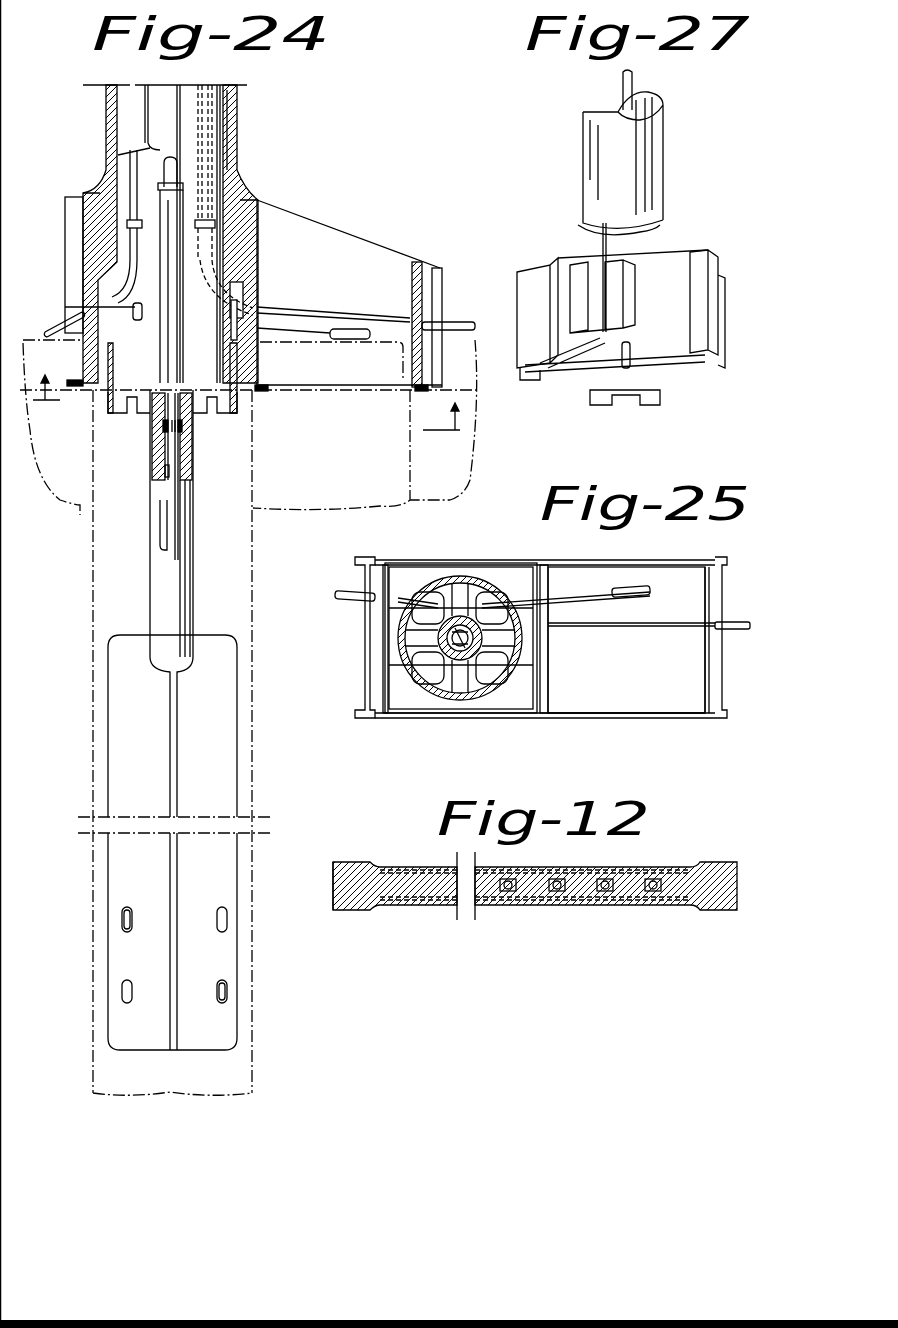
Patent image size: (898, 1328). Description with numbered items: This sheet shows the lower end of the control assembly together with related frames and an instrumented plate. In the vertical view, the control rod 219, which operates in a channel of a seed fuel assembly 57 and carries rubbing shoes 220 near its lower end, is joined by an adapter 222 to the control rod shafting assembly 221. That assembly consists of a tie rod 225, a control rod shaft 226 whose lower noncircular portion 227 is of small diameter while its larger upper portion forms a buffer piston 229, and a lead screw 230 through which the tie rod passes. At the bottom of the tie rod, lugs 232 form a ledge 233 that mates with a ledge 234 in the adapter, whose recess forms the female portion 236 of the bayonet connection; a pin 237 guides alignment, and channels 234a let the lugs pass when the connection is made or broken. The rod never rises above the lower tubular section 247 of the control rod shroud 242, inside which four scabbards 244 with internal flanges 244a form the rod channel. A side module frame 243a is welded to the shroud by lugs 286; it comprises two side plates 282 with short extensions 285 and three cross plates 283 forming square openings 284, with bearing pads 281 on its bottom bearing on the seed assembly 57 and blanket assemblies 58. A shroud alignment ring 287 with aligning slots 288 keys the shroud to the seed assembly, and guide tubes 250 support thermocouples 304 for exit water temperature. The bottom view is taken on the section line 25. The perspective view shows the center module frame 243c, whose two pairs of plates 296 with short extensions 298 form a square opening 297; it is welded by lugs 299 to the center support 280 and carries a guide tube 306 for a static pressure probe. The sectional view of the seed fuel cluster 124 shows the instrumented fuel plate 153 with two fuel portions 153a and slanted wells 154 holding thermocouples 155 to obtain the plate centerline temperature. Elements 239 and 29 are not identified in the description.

In FIG. 24, the control rod shafting assembly 221 is at (160, 146).
In FIG. 24, the control rod scabbard 244 is at (115, 107).
In FIG. 25, the control rod scabbard 244 is at (400, 645).
In FIG. 24, the control rod shroud 242 is at (240, 117).
In FIG. 24, the lower tubular section 247 is at (232, 140).
In FIG. 24, the control rod shaft 226 is at (180, 167).
In FIG. 24, the lug 286 is at (97, 185).
In FIG. 25, the lug 286 is at (392, 628).
In FIG. 24, the short extension 285 is at (70, 200).
In FIG. 25, the short extension 285 is at (358, 718).
In FIG. 24, the lower noncircular portion 227 is at (173, 232).
In FIG. 25, the lower noncircular portion 227 is at (468, 625).
In FIG. 24, the guide tube 250 is at (130, 244).
In FIG. 25, the guide tube 250 is at (598, 598).
In FIG. 24, the thermocouple 304 is at (62, 325).
In FIG. 25, the thermocouple 304 is at (352, 588).
In FIG. 24, the side module frame 243a is at (352, 221).
In FIG. 25, the side module frame 243a is at (604, 727).
In FIG. 24, the side plate 282 is at (365, 250).
In FIG. 25, the side plate 282 is at (464, 548).
In FIG. 24, the cross plate 283 is at (417, 266).
In FIG. 25, the cross plate 283 is at (375, 667).
In FIG. 24, the shroud alignment ring 287 is at (245, 368).
In FIG. 25, the shroud alignment ring 287 is at (392, 602).
In FIG. 24, the bearing pad 281 is at (262, 392).
In FIG. 27, the bearing pad 281 is at (705, 360).
In FIG. 25, the bearing pad 281 is at (385, 718).
In FIG. 24, the blanket fuel assembly 58 is at (75, 510).
In FIG. 24, the seed fuel assembly 57 is at (97, 620).
In FIG. 24, the section line 25— 25 is at (251, 419).
In FIG. 24, the shroud aligning slot 288 is at (123, 415).
In FIG. 25, the shroud aligning slot 288 is at (400, 683).
In FIG. 24, the ledge 234 is at (158, 425).
In FIG. 24, the buffer piston 229 is at (155, 443).
In FIG. 24, the pin 239 is at (163, 474).
In FIG. 24, the ledge 233 is at (185, 422).
In FIG. 24, the lug 232 is at (183, 430).
In FIG. 25, the lug 232 is at (464, 638).
In FIG. 24, the channel 234a is at (195, 433).
In FIG. 25, the channel 234a is at (530, 634).
In FIG. 24, the female portion 236 is at (193, 450).
In FIG. 24, the lead screw 230 is at (163, 527).
In FIG. 24, the pin 237 is at (178, 545).
In FIG. 24, the control rod adapter 222 is at (155, 597).
In FIG. 24, the control rod 219 is at (125, 673).
In FIG. 24, the rubbing shoe 220 is at (217, 990).
In FIG. 27, the guide tube 306 is at (623, 90).
In FIG. 27, the center support 280 is at (632, 150).
In FIG. 27, the center module frame 243c is at (695, 219).
In FIG. 27, the lug 299 is at (585, 230).
In FIG. 27, the plate 296 is at (560, 265).
In FIG. 27, the short extension 298 is at (596, 270).
In FIG. 27, the foot 29 is at (528, 378).
In FIG. 27, the square opening 297 is at (604, 385).
In FIG. 25, the internal flange 244a is at (490, 742).
In FIG. 25, the square opening 284 is at (682, 666).
In FIG. 25, the tie rod 225 is at (455, 665).
In FIG. 12, the instrumented fuel plate 153 is at (395, 905).
In FIG. 12, the seed fuel cluster 124 is at (409, 926).
In FIG. 12, the fuel portion 153a is at (625, 872).
In FIG. 12, the well 154 is at (560, 890).
In FIG. 12, the thermocouple 155 is at (610, 880).